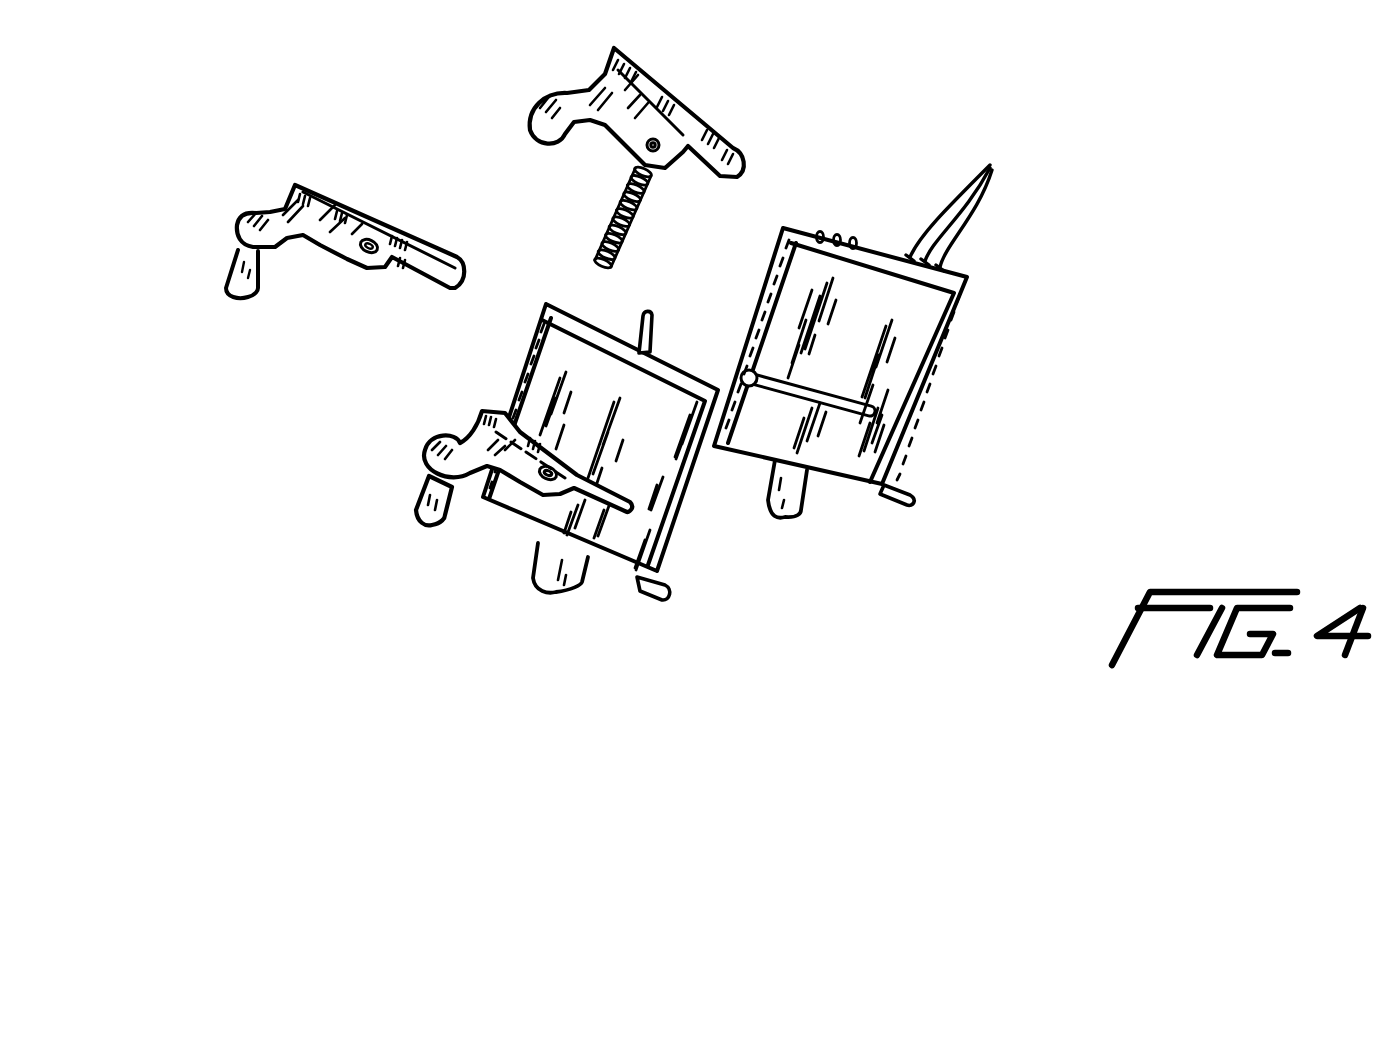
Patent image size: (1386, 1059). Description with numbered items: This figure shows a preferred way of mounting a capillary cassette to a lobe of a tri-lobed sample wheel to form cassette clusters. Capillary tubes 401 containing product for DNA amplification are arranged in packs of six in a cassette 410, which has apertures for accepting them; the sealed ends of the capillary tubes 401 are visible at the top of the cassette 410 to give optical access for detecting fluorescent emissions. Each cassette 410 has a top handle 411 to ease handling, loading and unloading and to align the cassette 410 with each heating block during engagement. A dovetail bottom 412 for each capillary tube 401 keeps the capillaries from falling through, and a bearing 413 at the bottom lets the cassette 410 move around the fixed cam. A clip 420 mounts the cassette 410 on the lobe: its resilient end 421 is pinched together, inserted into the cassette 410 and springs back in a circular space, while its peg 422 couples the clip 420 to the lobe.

The capillary tubes 401 is at (990, 176).
The capillary cassette 410 is at (975, 295).
The top handle 411 is at (648, 311).
The dovetail bottom 412 is at (643, 597).
The bearing 413 is at (532, 583).
The clip 420 is at (240, 185).
The resilient end 421 is at (435, 247).
The peg 422 is at (220, 285).